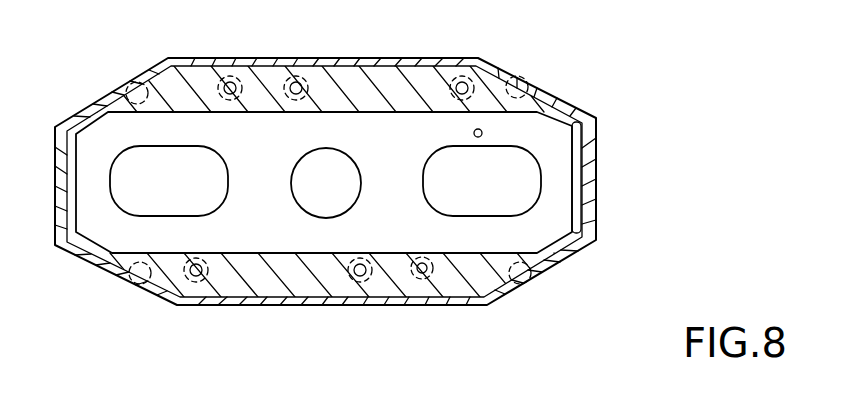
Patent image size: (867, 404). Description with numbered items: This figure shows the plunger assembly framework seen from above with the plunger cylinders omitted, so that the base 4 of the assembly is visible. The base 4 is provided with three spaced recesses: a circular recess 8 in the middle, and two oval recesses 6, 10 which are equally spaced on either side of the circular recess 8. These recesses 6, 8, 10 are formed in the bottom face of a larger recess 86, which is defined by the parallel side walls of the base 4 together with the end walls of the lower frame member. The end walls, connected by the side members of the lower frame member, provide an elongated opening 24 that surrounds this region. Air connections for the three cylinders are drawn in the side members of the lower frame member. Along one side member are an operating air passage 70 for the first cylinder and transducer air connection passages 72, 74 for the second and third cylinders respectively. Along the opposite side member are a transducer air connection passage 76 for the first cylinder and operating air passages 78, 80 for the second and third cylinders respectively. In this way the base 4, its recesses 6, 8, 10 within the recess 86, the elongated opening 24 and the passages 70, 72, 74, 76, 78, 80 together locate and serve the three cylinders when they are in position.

The base 4 is at (558, 190).
The recess 6 is at (430, 170).
The recess 8 is at (302, 170).
The recess 10 is at (128, 140).
The elongated opening 24 is at (404, 244).
The operating air passage 70 is at (466, 86).
The transducer air connection passage 72 is at (290, 84).
The transducer air connection passage 74 is at (225, 86).
The transducer air connection passage 76 is at (433, 272).
The operating air passage 78 is at (363, 276).
The operating air passage 80 is at (197, 276).
The recess 86 is at (238, 246).